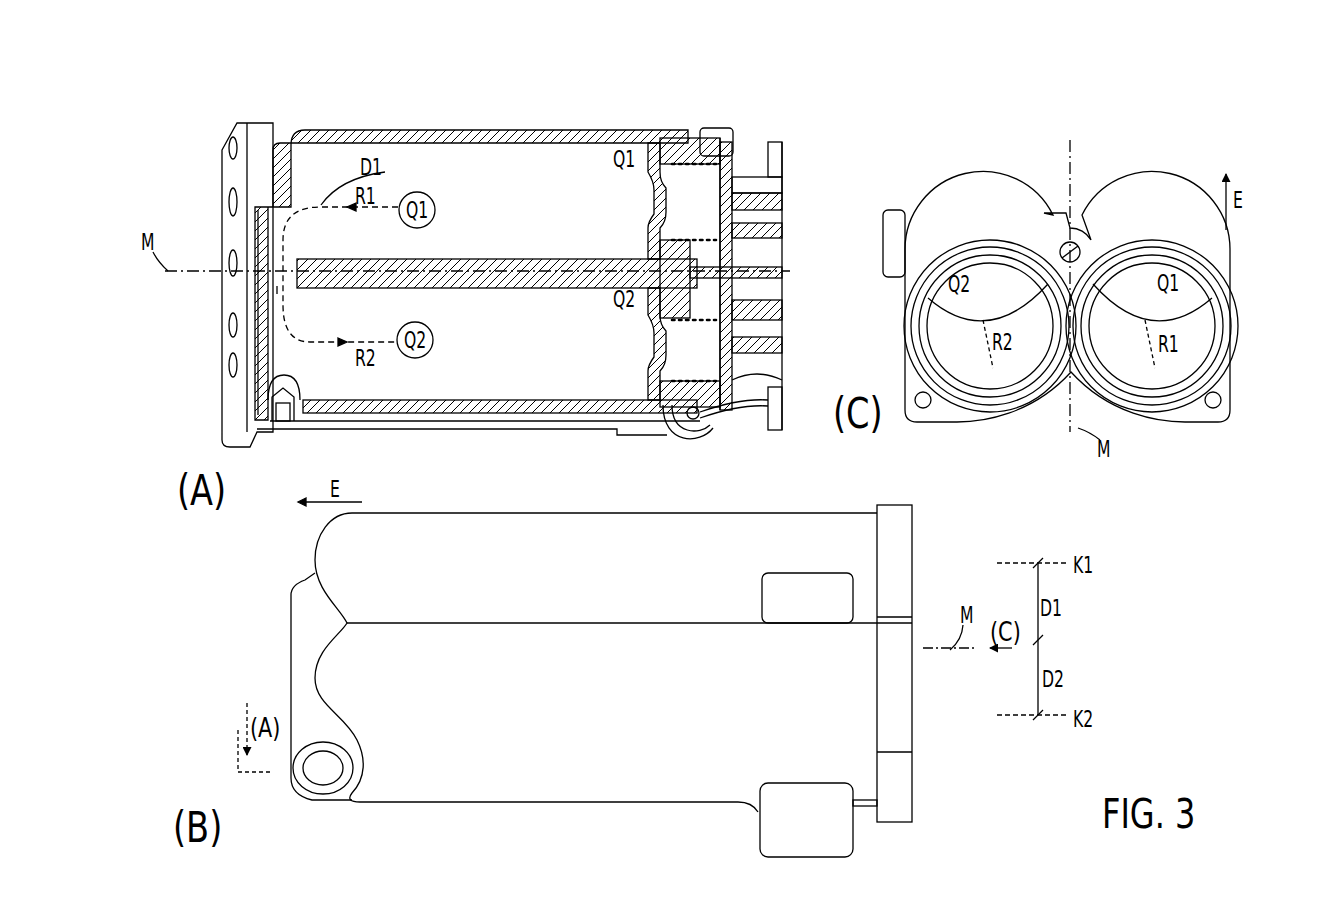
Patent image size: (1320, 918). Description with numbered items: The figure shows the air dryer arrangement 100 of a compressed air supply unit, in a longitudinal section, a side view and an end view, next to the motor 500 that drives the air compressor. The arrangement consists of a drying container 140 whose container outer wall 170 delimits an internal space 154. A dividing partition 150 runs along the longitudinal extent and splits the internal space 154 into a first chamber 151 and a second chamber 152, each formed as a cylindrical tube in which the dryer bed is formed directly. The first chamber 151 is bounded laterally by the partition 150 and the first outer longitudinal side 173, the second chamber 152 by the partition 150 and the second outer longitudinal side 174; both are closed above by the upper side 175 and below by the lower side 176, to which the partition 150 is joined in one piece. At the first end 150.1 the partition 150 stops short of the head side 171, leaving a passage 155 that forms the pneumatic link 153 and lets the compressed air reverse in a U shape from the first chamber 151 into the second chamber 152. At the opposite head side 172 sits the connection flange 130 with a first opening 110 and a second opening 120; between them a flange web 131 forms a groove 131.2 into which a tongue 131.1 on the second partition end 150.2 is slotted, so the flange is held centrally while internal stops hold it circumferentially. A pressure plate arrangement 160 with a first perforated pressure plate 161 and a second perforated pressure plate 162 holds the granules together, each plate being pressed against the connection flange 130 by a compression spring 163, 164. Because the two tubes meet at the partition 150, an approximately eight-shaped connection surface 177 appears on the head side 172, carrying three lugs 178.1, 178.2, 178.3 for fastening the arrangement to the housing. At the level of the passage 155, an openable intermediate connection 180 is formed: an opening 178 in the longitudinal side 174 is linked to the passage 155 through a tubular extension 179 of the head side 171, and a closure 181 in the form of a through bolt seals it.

The air dryer arrangement 100 is at (189, 150).
The first opening 110 is at (779, 216).
The second opening 120 is at (770, 330).
The connection flange 130 is at (736, 135).
The flange web 131 is at (735, 255).
The tongue 131.1 is at (702, 290).
The groove 131.2 is at (732, 282).
The drying container 140 is at (585, 127).
The dividing partition 150 is at (442, 262).
The first end of the partition 150.1 is at (302, 288).
The second partition end 150.2 is at (650, 238).
The first chamber 151 is at (494, 212).
The second chamber 152 is at (494, 353).
The pneumatic link 153 is at (277, 290).
The internal space 154 is at (329, 181).
The passage 155 is at (284, 268).
The pressure plate arrangement 160 is at (649, 142).
The first perforated pressure plate 161 is at (650, 187).
The second perforated pressure plate 162 is at (649, 330).
The compression spring 163 is at (690, 160).
The compression spring 164 is at (650, 380).
The container outer wall 170 is at (446, 127).
The head side 171 is at (247, 237).
The head side 172 is at (717, 428).
The first outer longitudinal side 173 is at (1220, 266).
The second outer longitudinal side 174 is at (896, 280).
The upper side 175 is at (959, 190).
The lower side 176 is at (993, 421).
The 8-shaped connection surface 177 is at (1224, 293).
The opening 178 is at (322, 780).
The lug 178.1 is at (1207, 420).
The lug 178.2 is at (917, 420).
The lug 178.3 is at (1052, 212).
The tubular extension 179 is at (308, 429).
The intermediate connection 180 is at (283, 423).
The closure 181 is at (290, 395).
The motor 500 is at (256, 150).